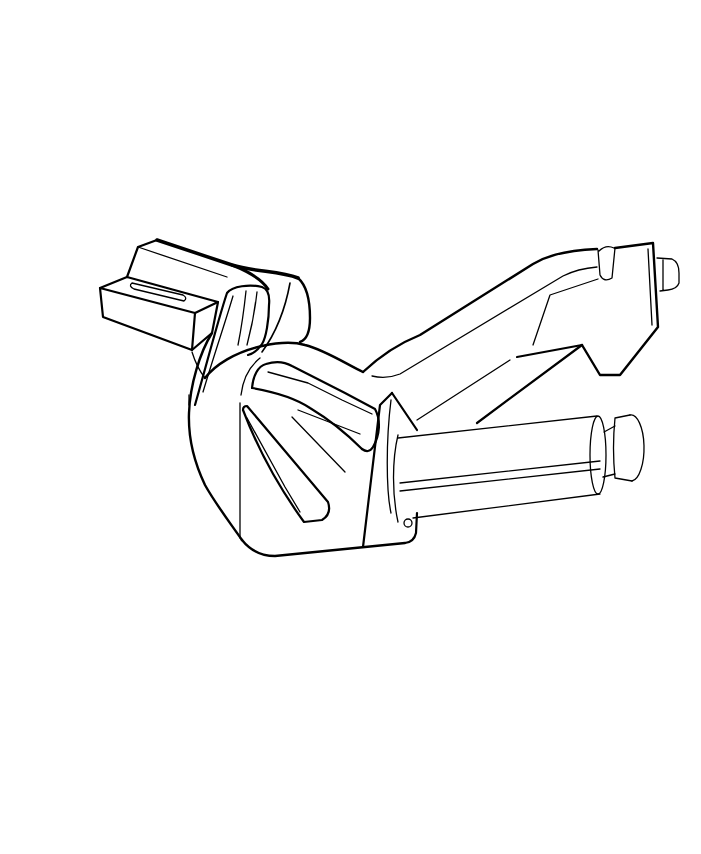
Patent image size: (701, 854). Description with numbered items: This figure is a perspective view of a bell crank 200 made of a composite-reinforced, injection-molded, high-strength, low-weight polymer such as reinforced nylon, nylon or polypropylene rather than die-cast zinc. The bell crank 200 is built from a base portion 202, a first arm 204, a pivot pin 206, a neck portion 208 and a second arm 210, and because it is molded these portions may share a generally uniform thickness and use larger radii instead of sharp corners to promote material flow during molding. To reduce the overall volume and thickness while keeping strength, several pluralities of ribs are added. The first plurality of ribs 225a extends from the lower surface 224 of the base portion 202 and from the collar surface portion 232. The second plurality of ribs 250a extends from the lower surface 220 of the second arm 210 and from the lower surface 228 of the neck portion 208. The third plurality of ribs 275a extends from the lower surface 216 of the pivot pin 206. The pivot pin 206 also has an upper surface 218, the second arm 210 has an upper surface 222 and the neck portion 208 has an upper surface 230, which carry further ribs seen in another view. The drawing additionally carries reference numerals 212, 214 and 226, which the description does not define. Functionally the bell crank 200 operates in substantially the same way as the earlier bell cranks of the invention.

The bell crank 200 is at (547, 99).
The base portion 202 is at (345, 345).
The first arm 204 is at (501, 250).
The pivot pin 206 is at (503, 529).
The neck portion 208 is at (162, 373).
The second arm 210 is at (121, 234).
The rear web face 212 is at (513, 375).
The arm 214 is at (449, 321).
The lower surface 216 is at (543, 447).
The upper surface 218 is at (615, 482).
The lower surface 220 is at (208, 260).
The upper surface 222 is at (167, 340).
The lower surface 224 is at (253, 484).
The first plurality of ribs 225a is at (338, 496).
The bottom edge of housing 226 is at (234, 538).
The lower surface 228 is at (277, 313).
The upper surface 230 is at (197, 387).
The collar surface portion 232 is at (363, 548).
The second plurality of ribs 250a is at (239, 311).
The third plurality of ribs 275a is at (453, 531).